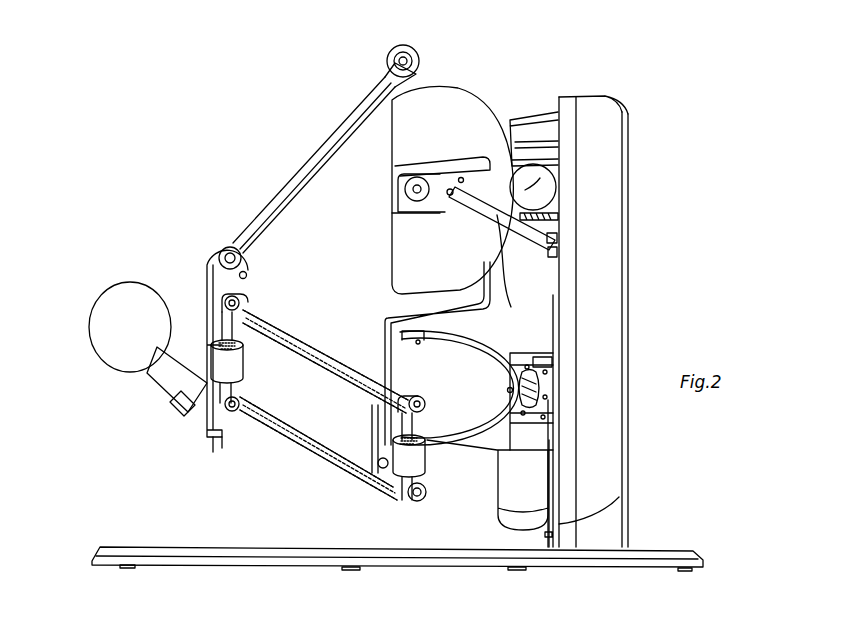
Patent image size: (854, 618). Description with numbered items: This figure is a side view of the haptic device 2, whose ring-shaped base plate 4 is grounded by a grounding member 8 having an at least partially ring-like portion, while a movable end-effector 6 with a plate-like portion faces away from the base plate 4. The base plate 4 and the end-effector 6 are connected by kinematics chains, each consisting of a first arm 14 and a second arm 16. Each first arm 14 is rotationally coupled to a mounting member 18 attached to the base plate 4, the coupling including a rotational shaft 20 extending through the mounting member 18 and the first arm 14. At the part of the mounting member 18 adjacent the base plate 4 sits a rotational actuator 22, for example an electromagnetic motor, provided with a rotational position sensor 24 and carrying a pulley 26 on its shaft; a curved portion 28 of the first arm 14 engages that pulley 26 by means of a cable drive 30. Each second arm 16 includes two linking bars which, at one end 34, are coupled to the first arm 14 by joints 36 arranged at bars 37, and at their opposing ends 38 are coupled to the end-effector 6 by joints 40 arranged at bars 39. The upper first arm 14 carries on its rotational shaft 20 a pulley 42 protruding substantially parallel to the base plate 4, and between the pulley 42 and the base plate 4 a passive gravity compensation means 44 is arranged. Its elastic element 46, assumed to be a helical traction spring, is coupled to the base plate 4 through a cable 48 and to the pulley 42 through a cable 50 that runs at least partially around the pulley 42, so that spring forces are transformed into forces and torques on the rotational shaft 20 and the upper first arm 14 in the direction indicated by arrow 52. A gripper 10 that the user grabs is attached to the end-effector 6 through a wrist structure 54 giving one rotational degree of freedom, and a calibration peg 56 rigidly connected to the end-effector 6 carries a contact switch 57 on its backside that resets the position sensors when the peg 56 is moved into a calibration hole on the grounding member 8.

The haptic device 2 is at (82, 200).
The base plate 4 is at (600, 122).
The end-effector 6 is at (207, 299).
The grounding member 8 is at (195, 553).
The gripper 10 is at (291, 160).
The first arm 14 is at (447, 110).
The second arm 16 is at (330, 165).
The mounting member 18 is at (510, 113).
The rotational shaft 20 is at (442, 166).
The rotational actuator 22 is at (548, 131).
The rotational position sensor 24 is at (530, 186).
The pulley 26 is at (575, 404).
The curved portion 28 is at (437, 78).
The cable drive 30 is at (463, 418).
The end of linking bar 34 is at (384, 70).
The joint 36 is at (418, 75).
The bar 37 is at (373, 428).
The opposing end of linking bar 38 is at (228, 243).
The bar 39 is at (244, 346).
The joint 40 is at (247, 277).
The pulley 42 is at (412, 172).
The passive gravity compensation means 44 is at (532, 250).
The elastic element 46 is at (515, 270).
The cable 48 is at (556, 236).
The cable 50 is at (396, 213).
The arrow 52 is at (477, 240).
The wrist structure 54 is at (158, 385).
The calibration peg 56 is at (212, 437).
The contact switch 57 is at (226, 440).